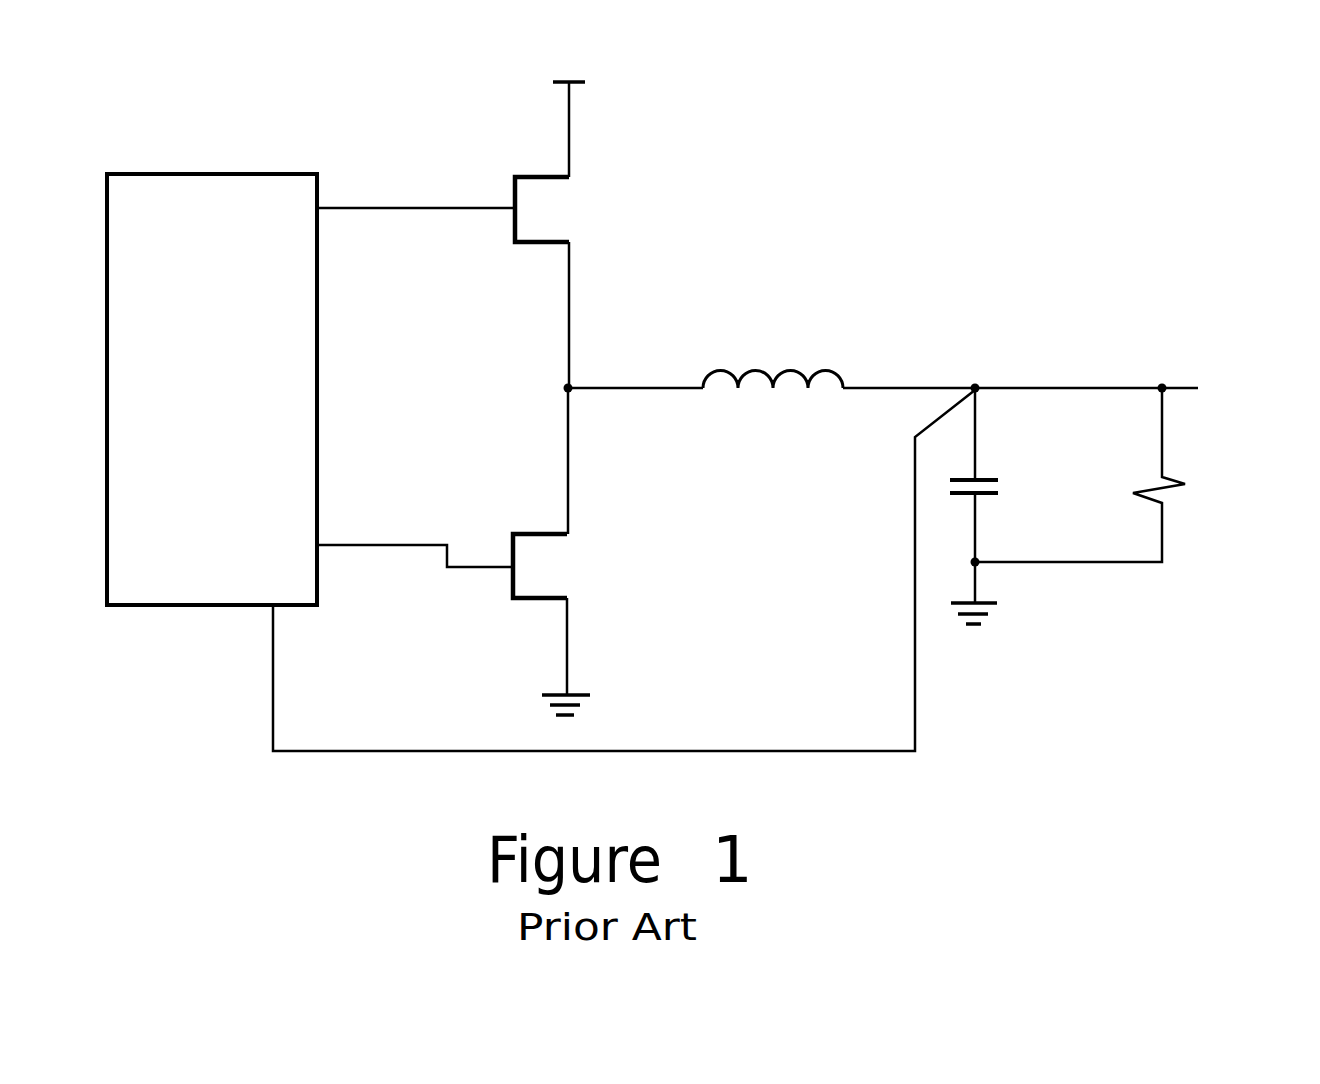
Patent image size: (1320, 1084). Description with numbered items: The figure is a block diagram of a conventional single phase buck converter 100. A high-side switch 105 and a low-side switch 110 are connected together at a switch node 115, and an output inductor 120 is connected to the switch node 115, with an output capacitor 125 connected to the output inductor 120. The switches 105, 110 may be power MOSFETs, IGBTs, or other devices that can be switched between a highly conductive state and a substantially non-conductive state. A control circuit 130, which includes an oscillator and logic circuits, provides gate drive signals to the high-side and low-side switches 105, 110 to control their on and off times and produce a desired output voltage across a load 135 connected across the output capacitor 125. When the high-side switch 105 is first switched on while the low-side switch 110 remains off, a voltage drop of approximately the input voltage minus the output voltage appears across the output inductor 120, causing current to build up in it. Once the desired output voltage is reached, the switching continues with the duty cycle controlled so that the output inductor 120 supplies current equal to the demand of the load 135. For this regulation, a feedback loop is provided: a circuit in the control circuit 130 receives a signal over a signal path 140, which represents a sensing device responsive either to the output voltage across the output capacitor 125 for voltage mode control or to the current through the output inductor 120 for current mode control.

The single phase buck converter 100 is at (697, 394).
The high-side switch 105 is at (580, 212).
The low-side switch 110 is at (577, 573).
The switch node 115 is at (556, 398).
The output inductor 120 is at (788, 355).
The output capacitor 125 is at (998, 482).
The control circuit 130 is at (177, 585).
The load 135 is at (1185, 484).
The signal path 140 is at (765, 750).